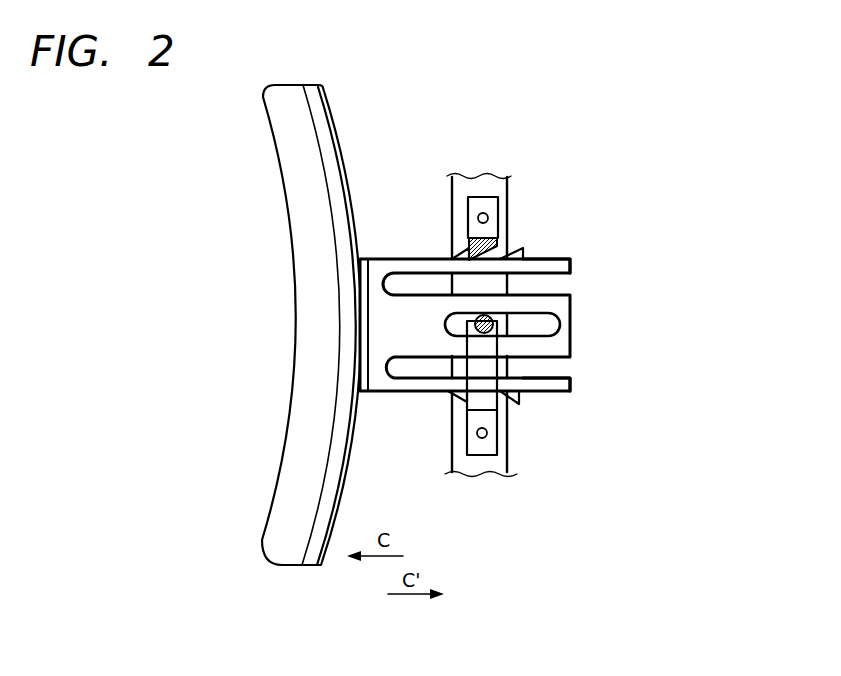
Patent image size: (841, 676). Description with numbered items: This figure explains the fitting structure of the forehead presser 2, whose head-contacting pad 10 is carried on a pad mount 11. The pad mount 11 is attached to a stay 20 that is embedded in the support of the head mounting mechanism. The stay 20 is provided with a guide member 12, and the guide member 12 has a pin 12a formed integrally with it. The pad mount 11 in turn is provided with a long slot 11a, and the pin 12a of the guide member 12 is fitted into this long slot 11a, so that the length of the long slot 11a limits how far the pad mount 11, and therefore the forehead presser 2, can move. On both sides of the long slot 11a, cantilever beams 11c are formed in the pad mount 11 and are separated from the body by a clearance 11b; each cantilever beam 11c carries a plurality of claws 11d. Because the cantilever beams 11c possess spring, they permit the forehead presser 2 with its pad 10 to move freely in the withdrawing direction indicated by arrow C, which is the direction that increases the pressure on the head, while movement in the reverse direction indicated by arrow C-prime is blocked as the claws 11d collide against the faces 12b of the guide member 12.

The forehead presser 2 is at (256, 552).
The pad 10 is at (284, 97).
The pad mount 11 is at (322, 120).
The long slot 11a is at (542, 325).
The clearance 11b is at (558, 283).
The cantilever beam 11c is at (558, 259).
The claw 11d is at (522, 253).
The guide member 12 is at (478, 402).
The pin 12a is at (474, 322).
The face 12b is at (467, 245).
The stay 20 is at (479, 463).